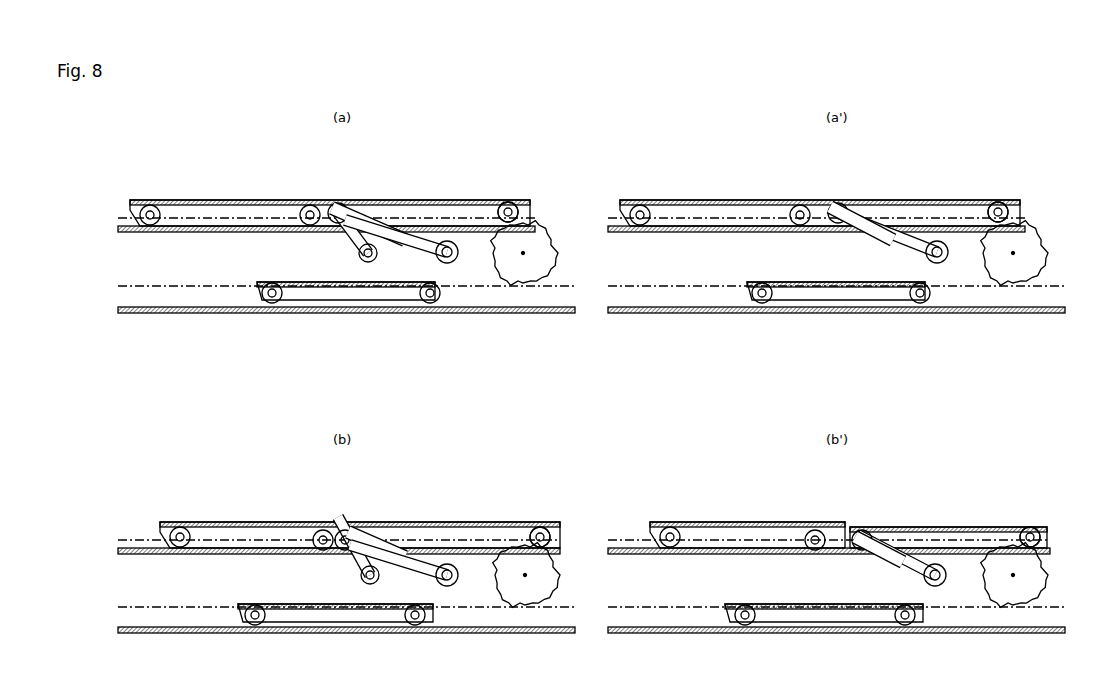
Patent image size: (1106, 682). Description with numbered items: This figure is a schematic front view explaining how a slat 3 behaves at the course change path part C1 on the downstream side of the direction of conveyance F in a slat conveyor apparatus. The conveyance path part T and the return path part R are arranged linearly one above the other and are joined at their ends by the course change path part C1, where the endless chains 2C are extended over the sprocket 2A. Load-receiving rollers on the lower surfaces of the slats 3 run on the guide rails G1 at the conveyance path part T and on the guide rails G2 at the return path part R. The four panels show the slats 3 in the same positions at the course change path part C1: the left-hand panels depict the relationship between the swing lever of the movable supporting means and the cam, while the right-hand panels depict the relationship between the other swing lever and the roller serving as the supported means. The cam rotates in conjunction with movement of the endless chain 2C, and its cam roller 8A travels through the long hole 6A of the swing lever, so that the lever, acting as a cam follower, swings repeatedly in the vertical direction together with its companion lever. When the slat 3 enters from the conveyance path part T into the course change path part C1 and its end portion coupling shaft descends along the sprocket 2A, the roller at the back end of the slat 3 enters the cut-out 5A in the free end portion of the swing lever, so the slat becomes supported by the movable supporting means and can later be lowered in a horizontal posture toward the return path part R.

The slat 3 is at (175, 200).
The cam roller 8A is at (345, 210).
The long hole 6A is at (405, 235).
The course change path part C1 is at (468, 196).
The sprocket 2A is at (540, 225).
The conveyance path part T is at (126, 218).
The return path part R is at (128, 305).
The guide rail G1 is at (195, 233).
The guide rail G2 is at (205, 314).
The endless chain 2C is at (247, 300).
The cut-out 5A is at (870, 215).
The direction of conveyance F is at (297, 181).